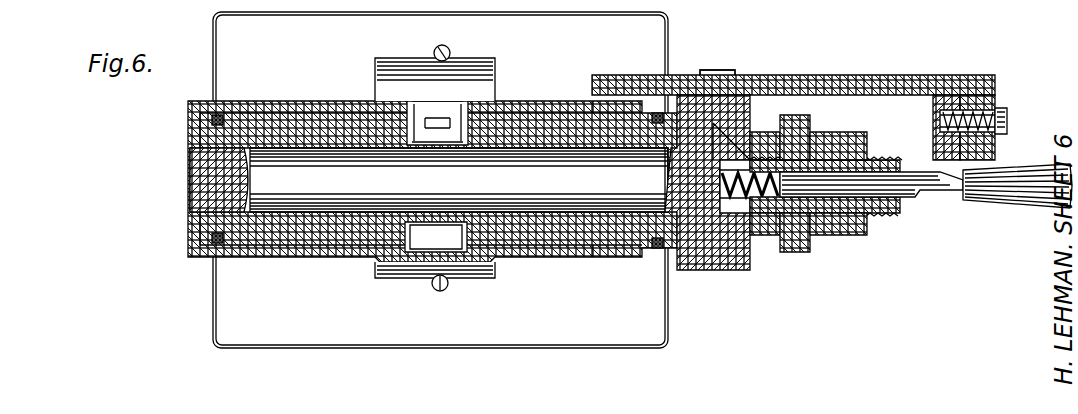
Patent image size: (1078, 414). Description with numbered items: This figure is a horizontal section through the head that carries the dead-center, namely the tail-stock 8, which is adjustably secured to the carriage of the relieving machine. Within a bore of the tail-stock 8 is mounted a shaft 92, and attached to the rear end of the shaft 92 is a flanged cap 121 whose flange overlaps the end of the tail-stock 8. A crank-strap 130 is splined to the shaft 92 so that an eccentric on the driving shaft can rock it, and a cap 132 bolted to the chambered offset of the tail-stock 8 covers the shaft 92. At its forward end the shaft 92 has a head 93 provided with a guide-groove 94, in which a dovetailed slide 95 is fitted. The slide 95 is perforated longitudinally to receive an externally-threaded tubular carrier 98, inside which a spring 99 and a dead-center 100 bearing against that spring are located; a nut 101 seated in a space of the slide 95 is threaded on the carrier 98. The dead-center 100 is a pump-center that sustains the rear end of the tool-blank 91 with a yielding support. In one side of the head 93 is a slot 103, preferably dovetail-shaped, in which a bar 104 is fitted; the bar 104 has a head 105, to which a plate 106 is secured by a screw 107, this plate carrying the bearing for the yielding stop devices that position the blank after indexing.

The tail-stock 8 is at (300, 100).
The tool-blank 91 is at (1044, 205).
The shaft 92 is at (459, 180).
The head 93 is at (710, 270).
The guide-groove 94 is at (740, 228).
The dovetailed slide 95 is at (748, 140).
The externally-threaded tubular carrier 98 is at (898, 152).
The spring 99 is at (808, 228).
The dead-center 100 is at (932, 186).
The nut 101 is at (812, 132).
The slot 103 is at (740, 72).
The bar 104 is at (828, 80).
The head 105 is at (940, 110).
The plate 106 is at (985, 66).
The screw 107 is at (1022, 104).
The flanged cap 121 is at (188, 254).
The crank-strap 130 is at (496, 101).
The cap 132 is at (418, 278).